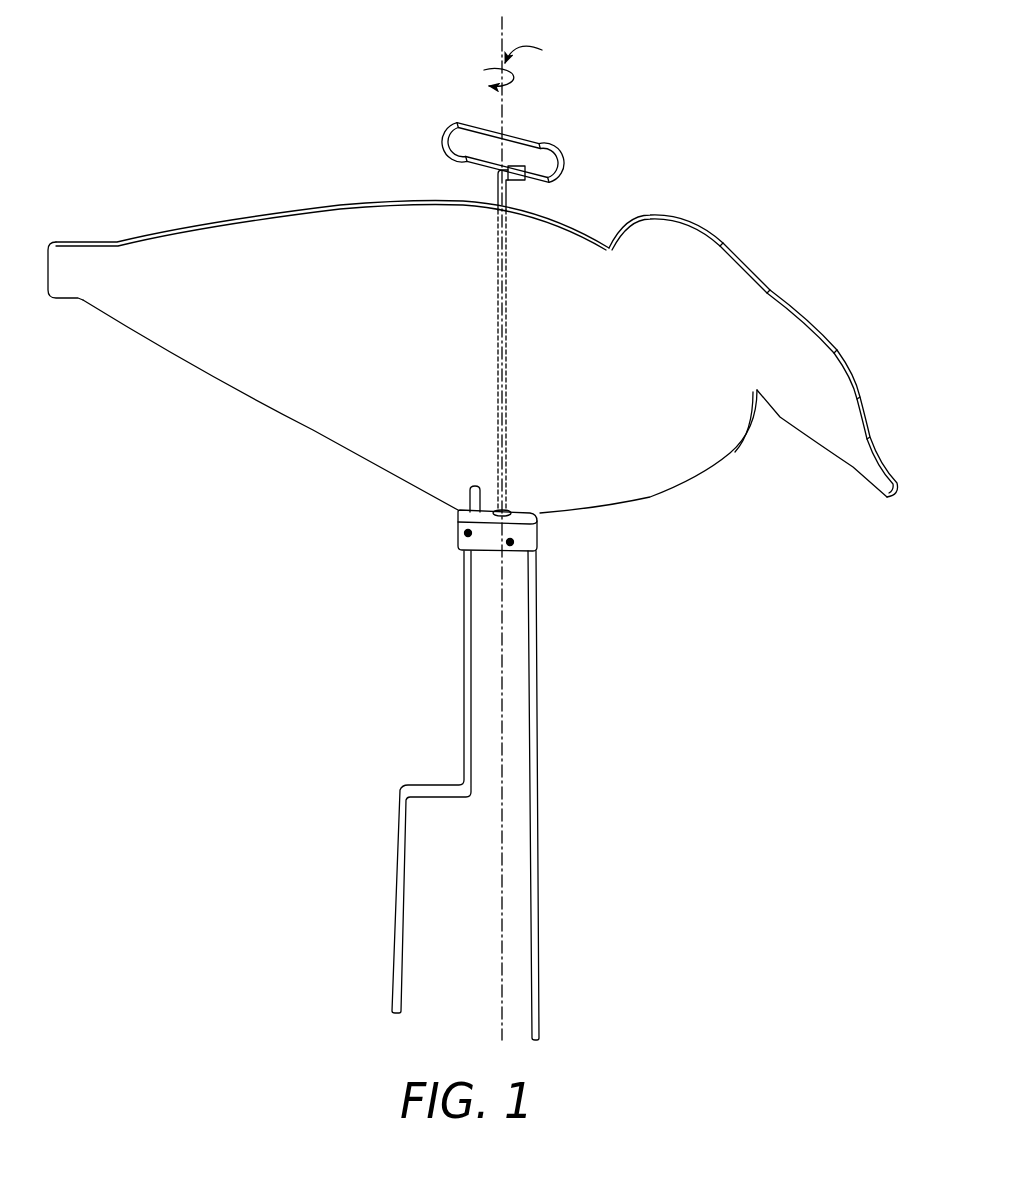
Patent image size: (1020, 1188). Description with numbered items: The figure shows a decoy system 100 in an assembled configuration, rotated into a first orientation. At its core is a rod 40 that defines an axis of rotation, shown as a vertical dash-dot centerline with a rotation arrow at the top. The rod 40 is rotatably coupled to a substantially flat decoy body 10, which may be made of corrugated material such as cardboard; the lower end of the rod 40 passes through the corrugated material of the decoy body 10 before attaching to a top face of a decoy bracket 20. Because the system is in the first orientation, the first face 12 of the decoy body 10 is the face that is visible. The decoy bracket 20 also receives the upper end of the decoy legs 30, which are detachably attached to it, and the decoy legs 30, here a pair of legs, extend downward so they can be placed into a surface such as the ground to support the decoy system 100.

The decoy system 100 is at (795, 145).
The substantially flat decoy body 10 is at (229, 384).
The first face 12 is at (822, 402).
The decoy bracket 20 is at (455, 524).
The decoy legs 30 is at (462, 672).
The rod 40 is at (443, 135).